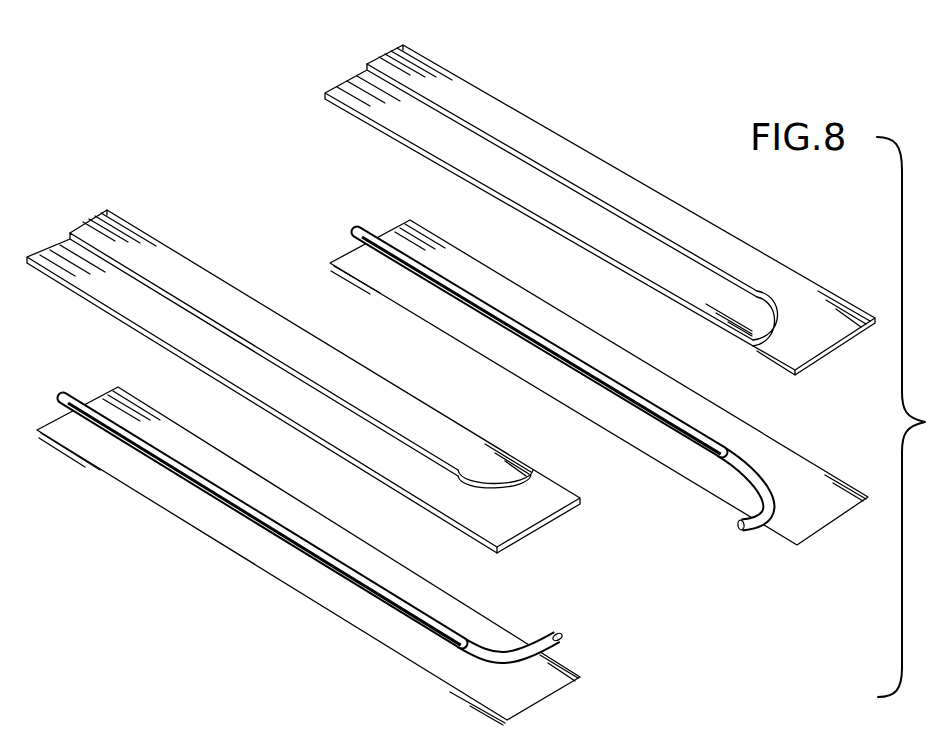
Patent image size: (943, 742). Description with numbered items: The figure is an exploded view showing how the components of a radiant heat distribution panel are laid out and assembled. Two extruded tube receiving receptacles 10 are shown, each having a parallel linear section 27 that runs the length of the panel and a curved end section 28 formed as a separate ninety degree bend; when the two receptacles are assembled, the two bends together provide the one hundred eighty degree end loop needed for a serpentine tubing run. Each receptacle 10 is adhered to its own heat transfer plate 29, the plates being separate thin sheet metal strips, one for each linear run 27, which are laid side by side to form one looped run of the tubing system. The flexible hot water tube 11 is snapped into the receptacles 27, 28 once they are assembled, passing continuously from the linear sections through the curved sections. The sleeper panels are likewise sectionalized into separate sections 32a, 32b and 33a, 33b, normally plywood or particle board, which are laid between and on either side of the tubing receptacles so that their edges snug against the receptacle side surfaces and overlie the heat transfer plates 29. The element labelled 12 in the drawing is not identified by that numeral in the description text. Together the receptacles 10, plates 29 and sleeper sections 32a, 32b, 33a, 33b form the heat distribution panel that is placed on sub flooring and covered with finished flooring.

The tube receiving receptacle 10 is at (599, 382).
The flexible hot water tube 11 is at (747, 532).
The plate 12 is at (800, 442).
The parallel linear section 27 is at (546, 328).
The curved end section 28 is at (777, 490).
The heat transfer plate 29 is at (718, 482).
The sleeper panel section 32a is at (680, 220).
The sleeper panel section 32b is at (727, 295).
The sleeper panel section 33a is at (433, 423).
The sleeper panel section 33b is at (275, 386).